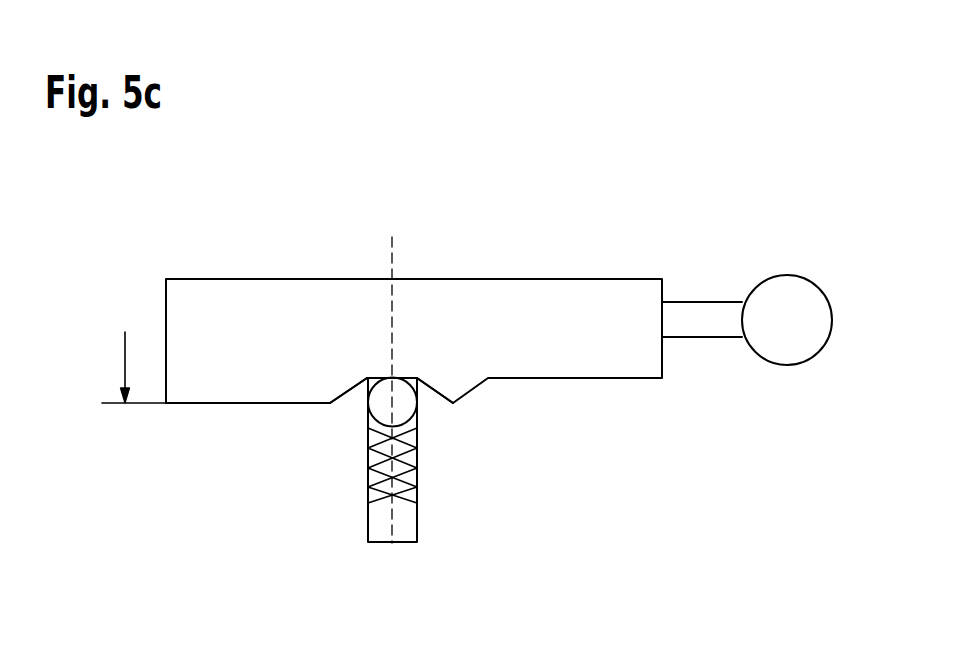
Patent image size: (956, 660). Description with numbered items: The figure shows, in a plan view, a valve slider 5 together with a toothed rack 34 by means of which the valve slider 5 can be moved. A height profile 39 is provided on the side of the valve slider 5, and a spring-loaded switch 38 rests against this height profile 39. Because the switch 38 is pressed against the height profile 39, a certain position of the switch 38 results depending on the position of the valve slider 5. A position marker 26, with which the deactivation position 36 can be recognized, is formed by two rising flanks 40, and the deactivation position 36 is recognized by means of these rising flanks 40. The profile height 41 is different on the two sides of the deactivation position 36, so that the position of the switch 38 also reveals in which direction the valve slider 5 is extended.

The valve slider 5 is at (783, 290).
The position marker 26 is at (367, 380).
The toothed rack 34 is at (623, 291).
The deactivation position 36 is at (392, 253).
The spring-loaded switch 38 is at (400, 525).
The height profile 39 is at (282, 404).
The rising flanks 40 is at (348, 393).
The profile height 41 is at (125, 350).